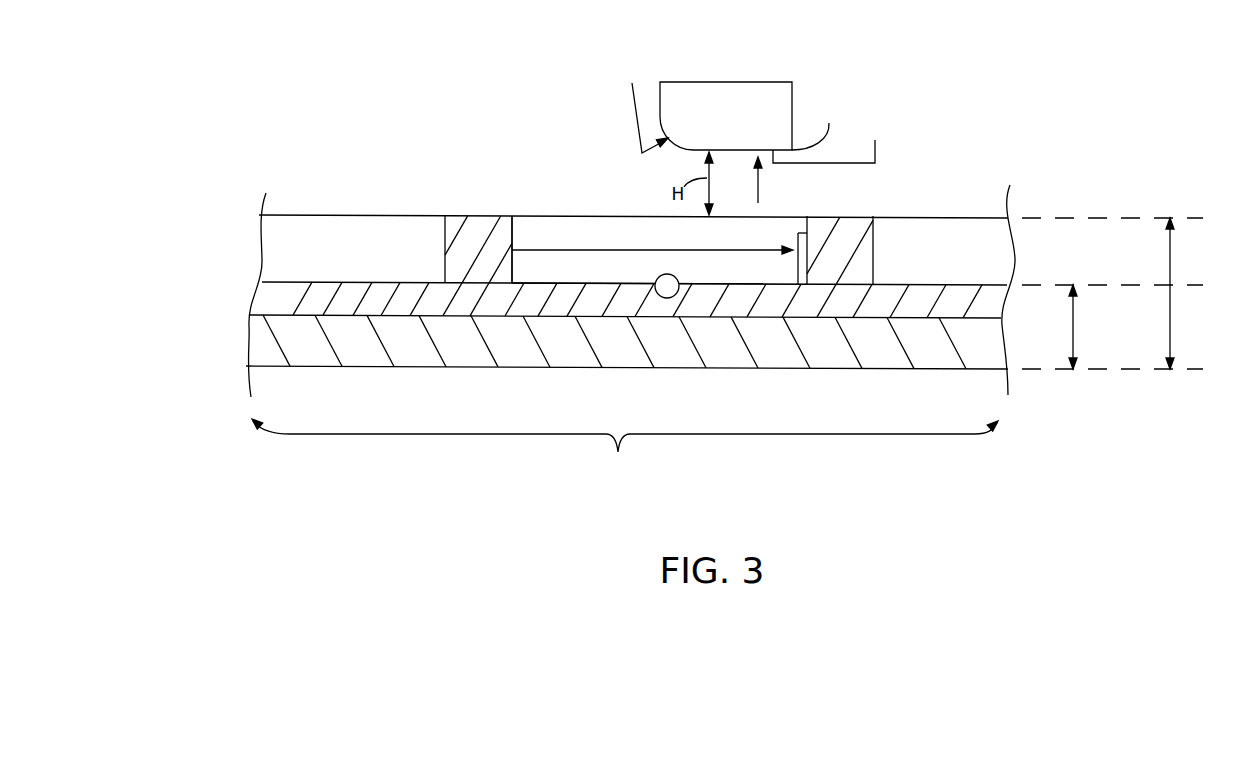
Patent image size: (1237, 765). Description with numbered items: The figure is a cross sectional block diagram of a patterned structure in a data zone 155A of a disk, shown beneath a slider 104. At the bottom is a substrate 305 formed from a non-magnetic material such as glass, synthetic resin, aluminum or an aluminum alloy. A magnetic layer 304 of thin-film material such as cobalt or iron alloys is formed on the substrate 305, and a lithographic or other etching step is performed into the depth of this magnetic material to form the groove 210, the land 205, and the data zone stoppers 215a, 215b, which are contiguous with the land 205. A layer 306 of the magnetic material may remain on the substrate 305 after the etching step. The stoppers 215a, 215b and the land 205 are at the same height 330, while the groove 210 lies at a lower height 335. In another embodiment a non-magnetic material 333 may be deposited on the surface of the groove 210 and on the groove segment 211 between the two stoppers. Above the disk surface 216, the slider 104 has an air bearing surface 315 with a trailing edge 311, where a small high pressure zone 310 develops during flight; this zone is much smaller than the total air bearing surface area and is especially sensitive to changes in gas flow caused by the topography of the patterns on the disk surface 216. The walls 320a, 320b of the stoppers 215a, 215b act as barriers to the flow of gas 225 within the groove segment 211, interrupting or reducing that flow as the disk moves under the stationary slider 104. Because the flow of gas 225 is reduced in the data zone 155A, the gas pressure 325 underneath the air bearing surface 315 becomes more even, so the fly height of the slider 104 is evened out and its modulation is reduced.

The slider 104 is at (715, 131).
The data zone 155A is at (293, 434).
The land 205 is at (377, 214).
The groove 210 is at (318, 282).
The groove segment 211 is at (560, 232).
The data zone stopper 215a is at (457, 247).
The data zone stopper 215b is at (862, 240).
The disk surface 216 is at (282, 212).
The flow of gas 225 is at (605, 250).
The magnetic layer 304 is at (288, 254).
The layer of magnetic material 306 is at (287, 296).
The substrate 305 is at (268, 343).
The high pressure zone 310 is at (834, 142).
The trailing edge 311 is at (823, 127).
The air bearing surface 315 is at (636, 108).
The wall 320a is at (516, 219).
The wall 320b is at (800, 284).
The gas pressure 325 is at (758, 184).
The non-magnetic material 333 is at (665, 298).
The height H330 330 is at (1170, 266).
The height H335 335 is at (1073, 310).